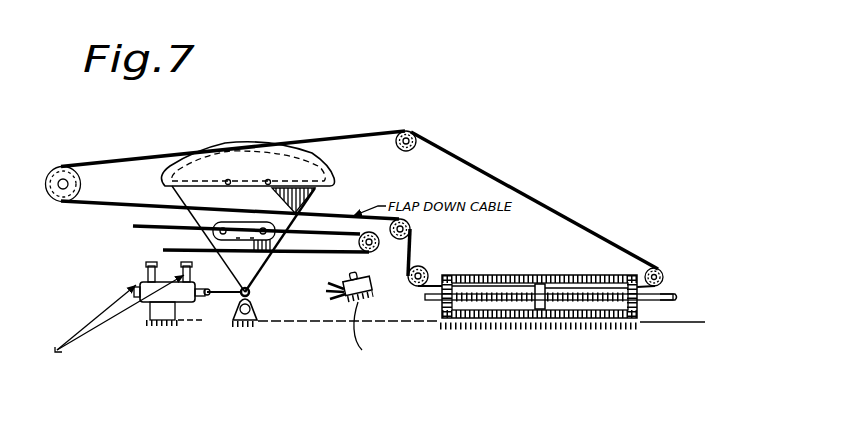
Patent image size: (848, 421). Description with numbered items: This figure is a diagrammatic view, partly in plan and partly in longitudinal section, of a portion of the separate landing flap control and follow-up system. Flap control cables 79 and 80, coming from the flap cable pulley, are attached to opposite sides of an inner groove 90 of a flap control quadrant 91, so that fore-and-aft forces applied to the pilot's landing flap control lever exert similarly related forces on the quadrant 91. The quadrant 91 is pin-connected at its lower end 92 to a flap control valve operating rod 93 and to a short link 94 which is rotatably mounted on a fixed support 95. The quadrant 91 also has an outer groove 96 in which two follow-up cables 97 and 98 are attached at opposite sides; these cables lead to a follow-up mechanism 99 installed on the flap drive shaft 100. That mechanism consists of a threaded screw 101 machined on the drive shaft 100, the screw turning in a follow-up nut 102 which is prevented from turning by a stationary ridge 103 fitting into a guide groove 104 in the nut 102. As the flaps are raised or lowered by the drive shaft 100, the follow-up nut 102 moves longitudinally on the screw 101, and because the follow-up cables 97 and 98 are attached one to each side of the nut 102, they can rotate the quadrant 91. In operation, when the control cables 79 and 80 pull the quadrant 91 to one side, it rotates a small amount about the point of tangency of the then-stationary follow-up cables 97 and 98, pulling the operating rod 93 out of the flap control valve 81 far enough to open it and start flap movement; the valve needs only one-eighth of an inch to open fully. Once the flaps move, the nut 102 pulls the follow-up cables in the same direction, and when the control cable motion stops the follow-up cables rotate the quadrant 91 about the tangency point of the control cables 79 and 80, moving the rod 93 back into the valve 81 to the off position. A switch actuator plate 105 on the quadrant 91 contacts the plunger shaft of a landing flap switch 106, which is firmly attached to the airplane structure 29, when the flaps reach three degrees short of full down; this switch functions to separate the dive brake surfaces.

The follow-up cable 97 is at (88, 159).
The follow-up cable 98 is at (369, 128).
The flap control cable 79 is at (178, 230).
The flap control cable 80 is at (378, 255).
The outer groove 96 is at (328, 164).
The switch actuator plate 105 is at (312, 216).
The lower end 92 is at (266, 262).
The inner groove 90 is at (270, 258).
The flap control quadrant 91 is at (262, 271).
The flap control valve operating rod 93 is at (240, 294).
The short link 94 is at (256, 301).
The fixed support 95 is at (253, 322).
The flap control valve 81 is at (190, 292).
The landing flap switch 106 is at (369, 289).
The airplane structure 29 is at (368, 335).
The follow-up mechanism 99 is at (509, 276).
The stationary ridge 103 is at (618, 268).
The flap drive shaft 100 is at (670, 292).
The guide groove 104 is at (533, 312).
The threaded screw 101 is at (477, 302).
The follow-up nut 102 is at (553, 302).